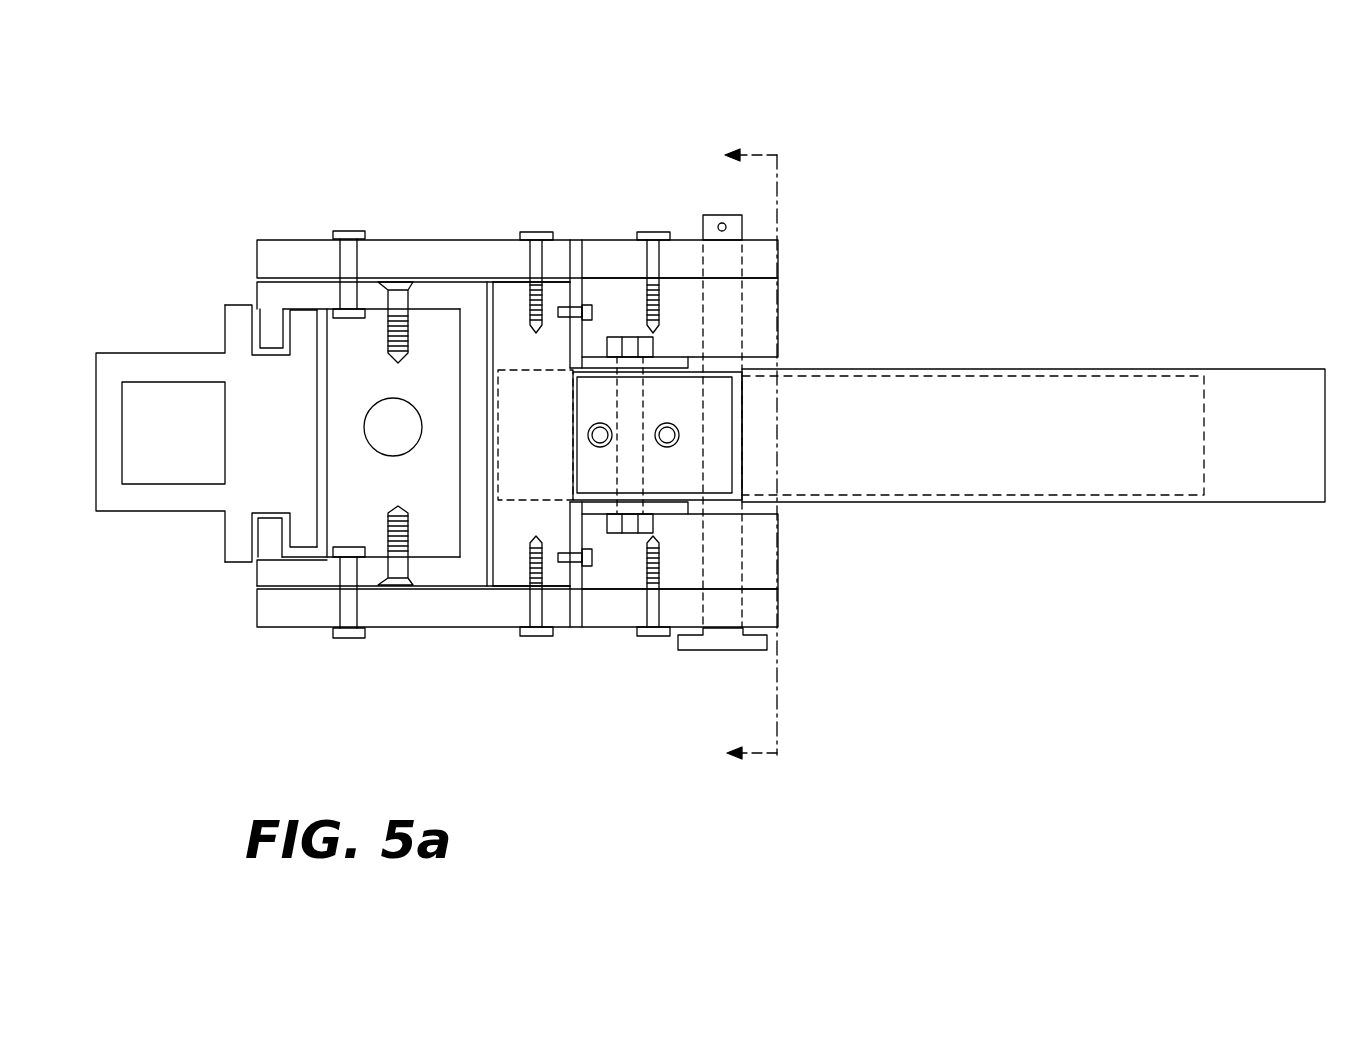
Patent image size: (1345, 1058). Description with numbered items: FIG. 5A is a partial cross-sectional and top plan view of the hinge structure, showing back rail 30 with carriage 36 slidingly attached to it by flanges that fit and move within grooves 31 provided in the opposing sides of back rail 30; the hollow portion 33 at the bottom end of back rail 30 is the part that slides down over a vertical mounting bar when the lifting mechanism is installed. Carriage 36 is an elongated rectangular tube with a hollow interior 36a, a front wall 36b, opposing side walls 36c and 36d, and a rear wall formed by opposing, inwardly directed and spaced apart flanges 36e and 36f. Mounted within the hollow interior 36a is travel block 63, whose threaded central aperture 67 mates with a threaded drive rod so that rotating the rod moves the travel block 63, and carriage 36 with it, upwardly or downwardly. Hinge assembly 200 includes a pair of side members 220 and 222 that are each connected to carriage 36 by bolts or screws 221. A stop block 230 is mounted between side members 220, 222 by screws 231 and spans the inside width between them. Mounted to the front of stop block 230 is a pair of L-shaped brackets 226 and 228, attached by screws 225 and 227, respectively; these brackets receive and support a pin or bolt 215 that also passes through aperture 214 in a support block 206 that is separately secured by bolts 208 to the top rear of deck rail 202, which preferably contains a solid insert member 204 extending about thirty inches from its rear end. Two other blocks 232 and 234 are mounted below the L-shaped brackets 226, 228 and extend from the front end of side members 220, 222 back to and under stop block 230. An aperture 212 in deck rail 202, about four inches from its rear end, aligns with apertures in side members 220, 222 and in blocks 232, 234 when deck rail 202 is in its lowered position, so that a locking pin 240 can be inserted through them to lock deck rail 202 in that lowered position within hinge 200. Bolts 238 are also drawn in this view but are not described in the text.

The back rail 30 is at (118, 336).
The grooves 31 is at (250, 318).
The hollow portion 33 is at (140, 482).
The carriage 36 is at (310, 573).
The hollow interior 36a is at (283, 568).
The front wall 36b is at (472, 472).
The side wall 36c is at (443, 303).
The side wall 36d is at (440, 567).
The flange 36e is at (270, 336).
The flange 36f is at (268, 532).
The travel block 63 is at (348, 492).
The threaded central aperture 67 is at (381, 410).
The hinge assembly 200 is at (824, 226).
The deck rail 202 is at (1060, 368).
The solid insert member 204 is at (1020, 495).
The support block 206 is at (690, 480).
The bolts 208 is at (667, 423).
The aperture 212 is at (760, 545).
The aperture 214 is at (615, 476).
The pin or bolt 215 is at (616, 238).
The side member 220 is at (425, 240).
The bolts or screws 221 is at (352, 230).
The side member 222 is at (405, 630).
The screws 225 is at (561, 238).
The L-shaped bracket 226 is at (577, 238).
The screws 227 is at (560, 542).
The L-shaped bracket 228 is at (577, 618).
The stop block 230 is at (483, 238).
The screws 231 is at (538, 231).
The block 232 is at (780, 290).
The block 234 is at (780, 590).
The bolt 238 is at (657, 231).
The locking pin 240 is at (730, 652).